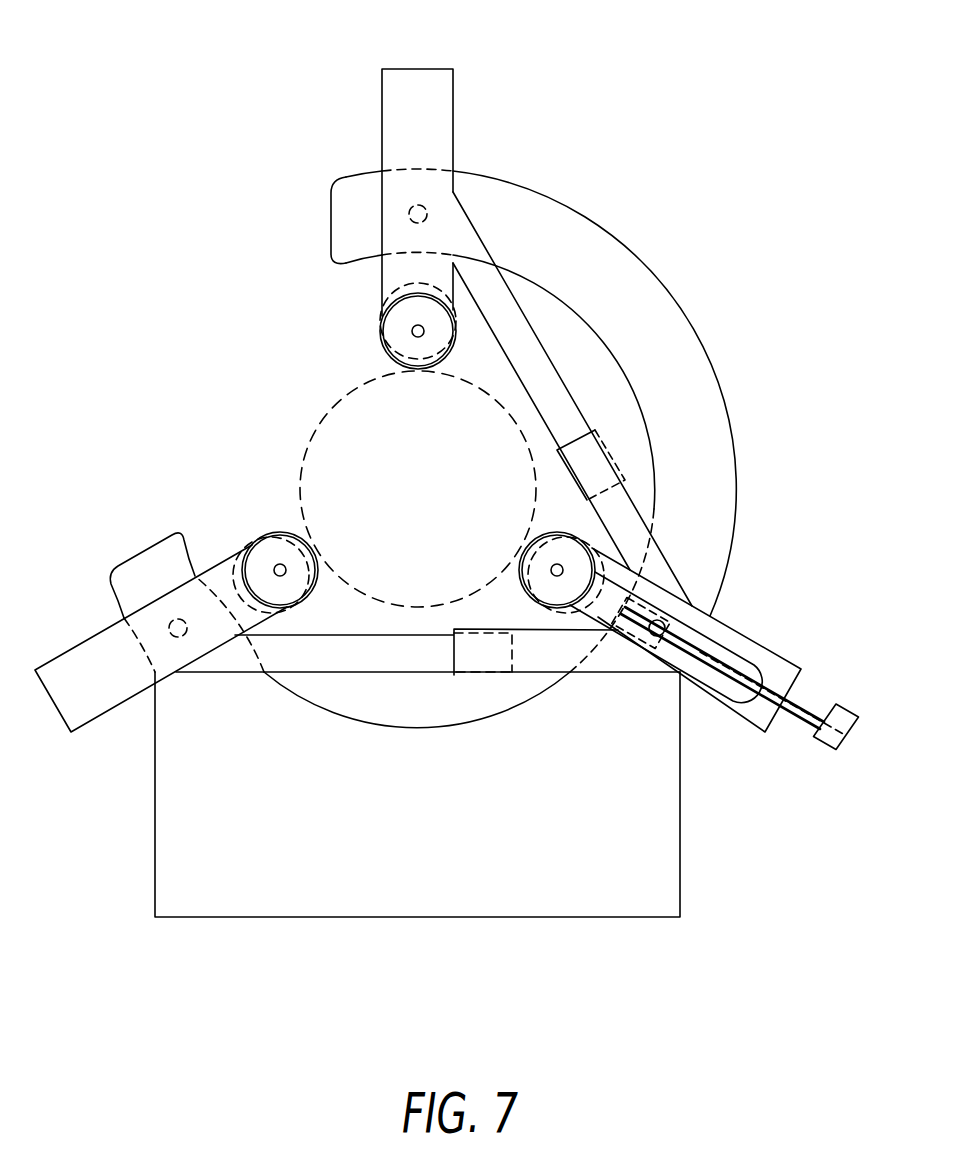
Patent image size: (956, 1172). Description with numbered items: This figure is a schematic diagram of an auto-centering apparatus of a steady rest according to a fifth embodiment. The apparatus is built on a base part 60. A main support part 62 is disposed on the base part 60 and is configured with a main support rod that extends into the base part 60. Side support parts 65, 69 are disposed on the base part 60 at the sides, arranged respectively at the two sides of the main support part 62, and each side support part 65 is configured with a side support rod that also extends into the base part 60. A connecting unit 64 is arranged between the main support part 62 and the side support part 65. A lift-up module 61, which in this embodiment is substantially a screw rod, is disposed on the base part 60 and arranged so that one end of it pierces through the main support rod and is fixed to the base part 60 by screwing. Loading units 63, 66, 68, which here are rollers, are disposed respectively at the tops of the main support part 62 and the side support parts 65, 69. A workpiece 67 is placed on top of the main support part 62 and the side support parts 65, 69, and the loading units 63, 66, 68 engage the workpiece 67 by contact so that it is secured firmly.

The base part 60 is at (646, 866).
The lift-up module 61 is at (818, 750).
The main support part 62 is at (762, 647).
The loading unit 63 is at (563, 550).
The connecting unit 64 is at (503, 660).
The side support part 65 is at (218, 577).
The loading unit 66 is at (270, 530).
The workpiece 67 is at (345, 412).
The loading unit 68 is at (403, 317).
The side support part 69 is at (437, 123).